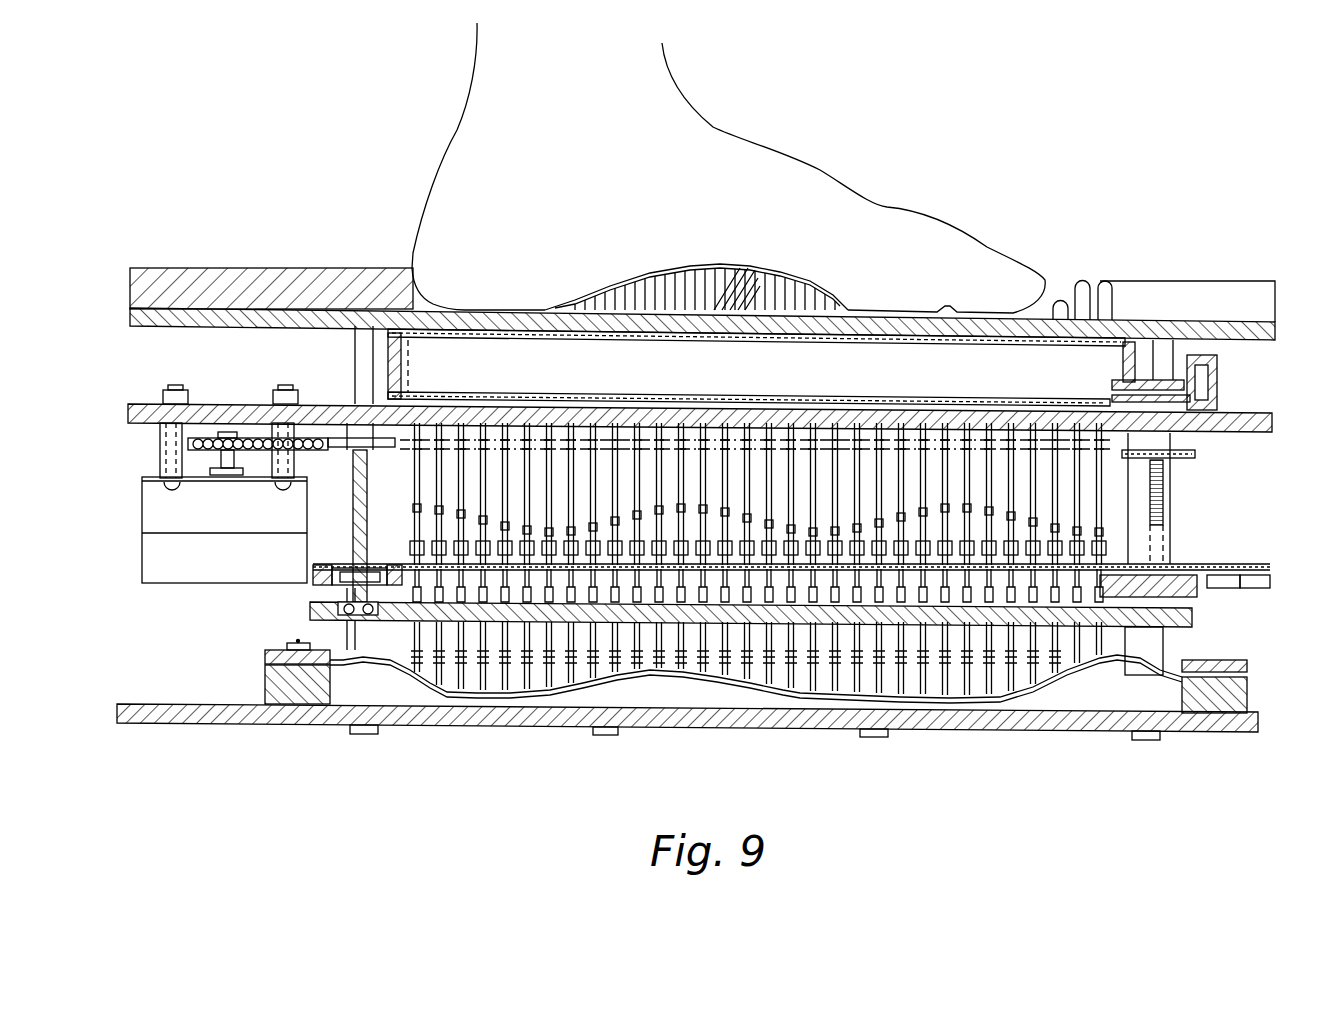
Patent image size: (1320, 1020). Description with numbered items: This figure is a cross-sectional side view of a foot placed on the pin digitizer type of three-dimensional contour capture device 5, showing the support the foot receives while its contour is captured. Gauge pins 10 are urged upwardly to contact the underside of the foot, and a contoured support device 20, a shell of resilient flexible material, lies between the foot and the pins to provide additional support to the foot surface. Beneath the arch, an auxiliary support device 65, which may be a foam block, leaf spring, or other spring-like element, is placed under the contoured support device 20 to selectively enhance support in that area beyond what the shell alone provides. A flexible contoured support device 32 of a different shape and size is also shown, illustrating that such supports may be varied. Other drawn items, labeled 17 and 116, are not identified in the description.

The 3-D contour capture device 5 is at (258, 208).
The gauge pins 10 is at (1098, 282).
The heel locating post 17 is at (1068, 280).
The contoured support device 20 is at (805, 270).
The contoured support device 32 is at (1165, 647).
The auxiliary support device 65 is at (758, 268).
The support post 116 is at (345, 406).